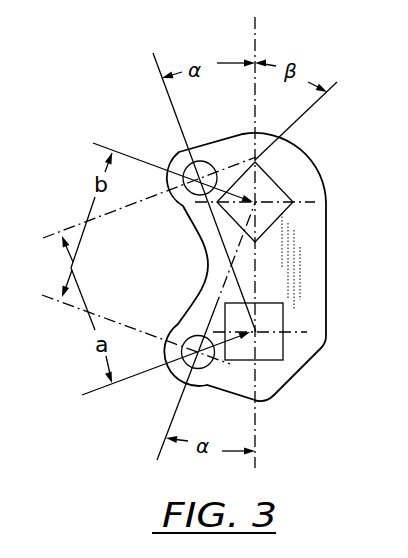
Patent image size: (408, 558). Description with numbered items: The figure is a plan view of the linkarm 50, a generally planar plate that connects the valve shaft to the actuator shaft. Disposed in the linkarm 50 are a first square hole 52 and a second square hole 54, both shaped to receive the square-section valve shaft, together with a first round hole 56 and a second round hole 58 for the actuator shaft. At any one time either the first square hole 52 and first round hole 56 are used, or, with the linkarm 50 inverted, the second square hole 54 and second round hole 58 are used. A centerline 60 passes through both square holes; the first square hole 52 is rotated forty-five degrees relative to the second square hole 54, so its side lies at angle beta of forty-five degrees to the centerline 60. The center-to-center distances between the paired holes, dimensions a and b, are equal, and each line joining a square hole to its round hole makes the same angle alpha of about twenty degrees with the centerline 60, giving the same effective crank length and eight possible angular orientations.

The linkarm 50 is at (280, 399).
The first square hole 52 is at (299, 149).
The second square hole 54 is at (283, 345).
The first round hole 56 is at (183, 322).
The second round hole 58 is at (179, 152).
The centerline 60 is at (258, 41).